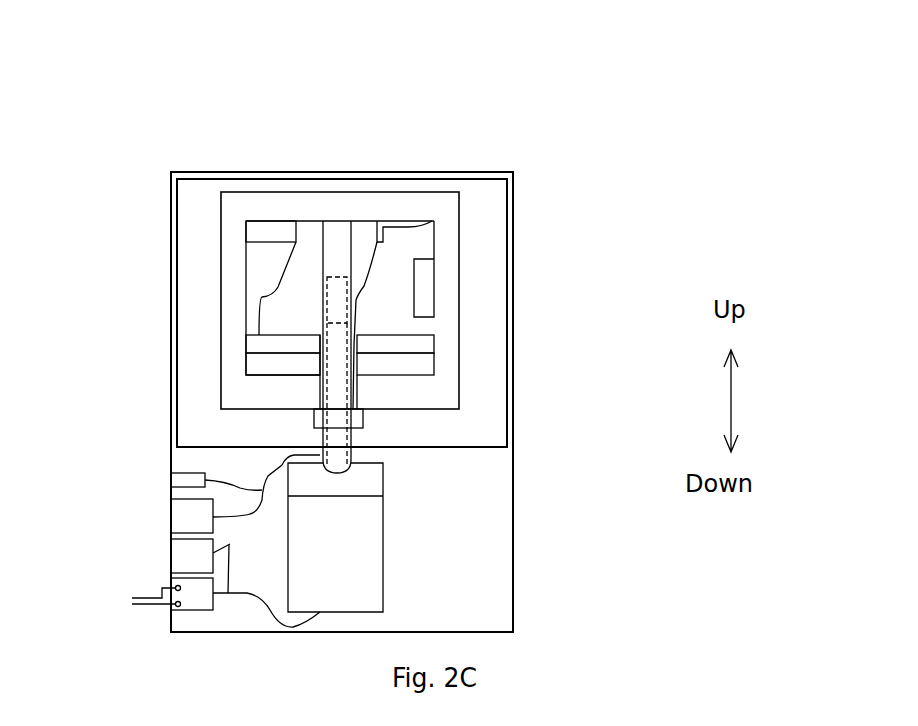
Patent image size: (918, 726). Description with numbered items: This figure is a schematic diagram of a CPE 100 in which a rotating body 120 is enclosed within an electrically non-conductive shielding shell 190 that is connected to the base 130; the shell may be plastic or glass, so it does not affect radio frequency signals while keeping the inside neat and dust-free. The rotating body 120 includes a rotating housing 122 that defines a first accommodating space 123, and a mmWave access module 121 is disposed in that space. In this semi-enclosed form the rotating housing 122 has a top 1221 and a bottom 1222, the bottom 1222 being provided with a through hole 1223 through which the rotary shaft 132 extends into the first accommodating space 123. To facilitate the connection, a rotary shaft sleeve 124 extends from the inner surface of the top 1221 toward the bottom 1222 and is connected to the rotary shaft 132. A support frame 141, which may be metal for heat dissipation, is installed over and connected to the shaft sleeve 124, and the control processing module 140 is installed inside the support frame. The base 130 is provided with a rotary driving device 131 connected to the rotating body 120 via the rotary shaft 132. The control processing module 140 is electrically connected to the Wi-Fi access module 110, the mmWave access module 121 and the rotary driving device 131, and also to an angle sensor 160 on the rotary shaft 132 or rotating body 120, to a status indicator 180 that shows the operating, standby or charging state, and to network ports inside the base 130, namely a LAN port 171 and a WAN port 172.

The CPE 100 is at (523, 182).
The electrically non-conductive shielding shell 190 is at (176, 193).
The rotating body 120 is at (461, 249).
The Wi-Fi access module 110 is at (410, 224).
The mmWave access module 121 is at (275, 228).
The rotating housing 122 is at (233, 265).
The top 1221 is at (365, 207).
The bottom 1222 is at (285, 398).
The through hole 1223 is at (285, 378).
The first accommodating space 123 is at (307, 257).
The rotary shaft sleeve 124 is at (337, 240).
The control processing module 140 is at (252, 340).
The support frame 141 is at (428, 370).
The angle sensor 160 is at (362, 420).
The rotary shaft 132 is at (335, 440).
The base 130 is at (478, 510).
The rotary driving device 131 is at (355, 577).
The status indicator 180 is at (176, 480).
The Local Area Network (LAN) port 171 is at (178, 521).
The Wide Area Network (WAN) port 172 is at (178, 560).